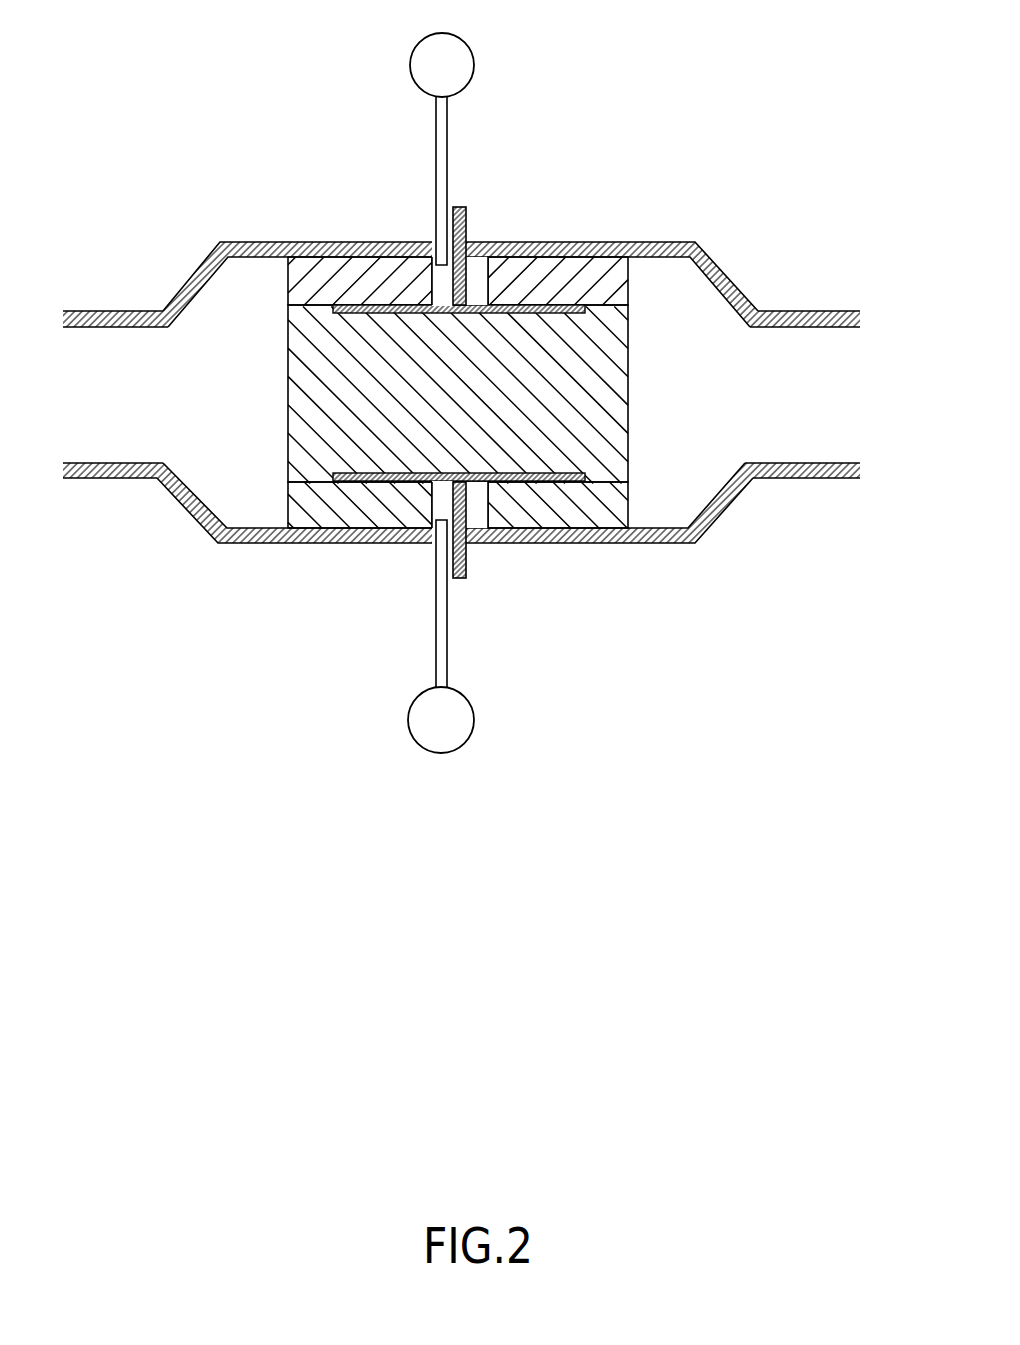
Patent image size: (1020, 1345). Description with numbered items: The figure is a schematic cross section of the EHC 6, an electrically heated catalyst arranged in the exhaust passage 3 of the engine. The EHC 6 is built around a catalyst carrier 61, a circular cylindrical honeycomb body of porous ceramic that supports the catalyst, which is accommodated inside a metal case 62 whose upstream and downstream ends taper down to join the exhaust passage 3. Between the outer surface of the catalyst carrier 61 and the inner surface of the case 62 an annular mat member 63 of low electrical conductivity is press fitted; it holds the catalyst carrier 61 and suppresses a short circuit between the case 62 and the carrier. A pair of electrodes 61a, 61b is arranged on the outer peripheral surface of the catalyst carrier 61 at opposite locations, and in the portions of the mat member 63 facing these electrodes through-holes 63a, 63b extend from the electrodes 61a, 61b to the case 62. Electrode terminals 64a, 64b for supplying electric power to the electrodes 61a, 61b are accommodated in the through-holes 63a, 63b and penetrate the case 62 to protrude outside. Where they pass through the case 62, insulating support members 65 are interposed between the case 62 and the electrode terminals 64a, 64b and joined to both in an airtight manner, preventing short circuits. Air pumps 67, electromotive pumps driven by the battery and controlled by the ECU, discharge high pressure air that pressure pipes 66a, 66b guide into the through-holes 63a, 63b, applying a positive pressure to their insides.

The exhaust passage 3 is at (121, 311).
The EHC 6 is at (467, 401).
The catalyst carrier 61 is at (297, 402).
The electrode 61a is at (558, 305).
The electrode 61b is at (367, 482).
The case 62 is at (240, 242).
The mat member 63 is at (494, 398).
The through-hole 63a is at (493, 282).
The through-hole 63b is at (491, 507).
The electrode terminal 64a is at (459, 207).
The electrode terminal 64b is at (458, 578).
The support member 65 is at (477, 283).
The pressure pipe 66a is at (437, 167).
The pressure pipe 66b is at (436, 622).
The air pump 67 is at (411, 63).